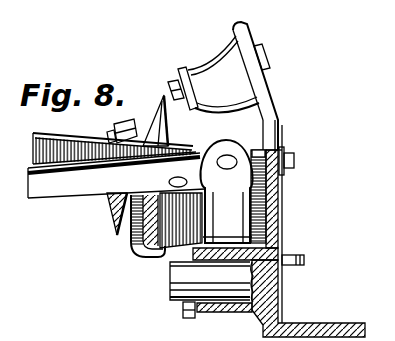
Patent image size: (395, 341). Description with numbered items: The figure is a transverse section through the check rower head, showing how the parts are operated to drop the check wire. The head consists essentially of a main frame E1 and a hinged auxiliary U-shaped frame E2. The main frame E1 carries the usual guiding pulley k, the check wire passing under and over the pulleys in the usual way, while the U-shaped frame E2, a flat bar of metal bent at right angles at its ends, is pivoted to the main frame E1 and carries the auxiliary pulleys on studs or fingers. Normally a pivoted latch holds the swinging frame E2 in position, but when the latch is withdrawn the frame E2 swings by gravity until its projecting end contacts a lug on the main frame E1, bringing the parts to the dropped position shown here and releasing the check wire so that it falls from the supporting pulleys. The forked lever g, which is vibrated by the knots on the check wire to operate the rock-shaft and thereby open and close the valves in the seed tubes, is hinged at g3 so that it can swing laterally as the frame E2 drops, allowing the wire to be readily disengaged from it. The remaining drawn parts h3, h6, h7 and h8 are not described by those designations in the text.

The forked lever g is at (116, 175).
The hinge of forked lever g3 is at (184, 177).
The blade h3 is at (155, 117).
The guiding pulley k is at (213, 74).
The main frame E1 is at (282, 279).
The nut h7 is at (282, 202).
The stud h8 is at (290, 255).
The hinged auxiliary U-shaped frame E2 is at (143, 235).
The pawl h6 is at (137, 235).